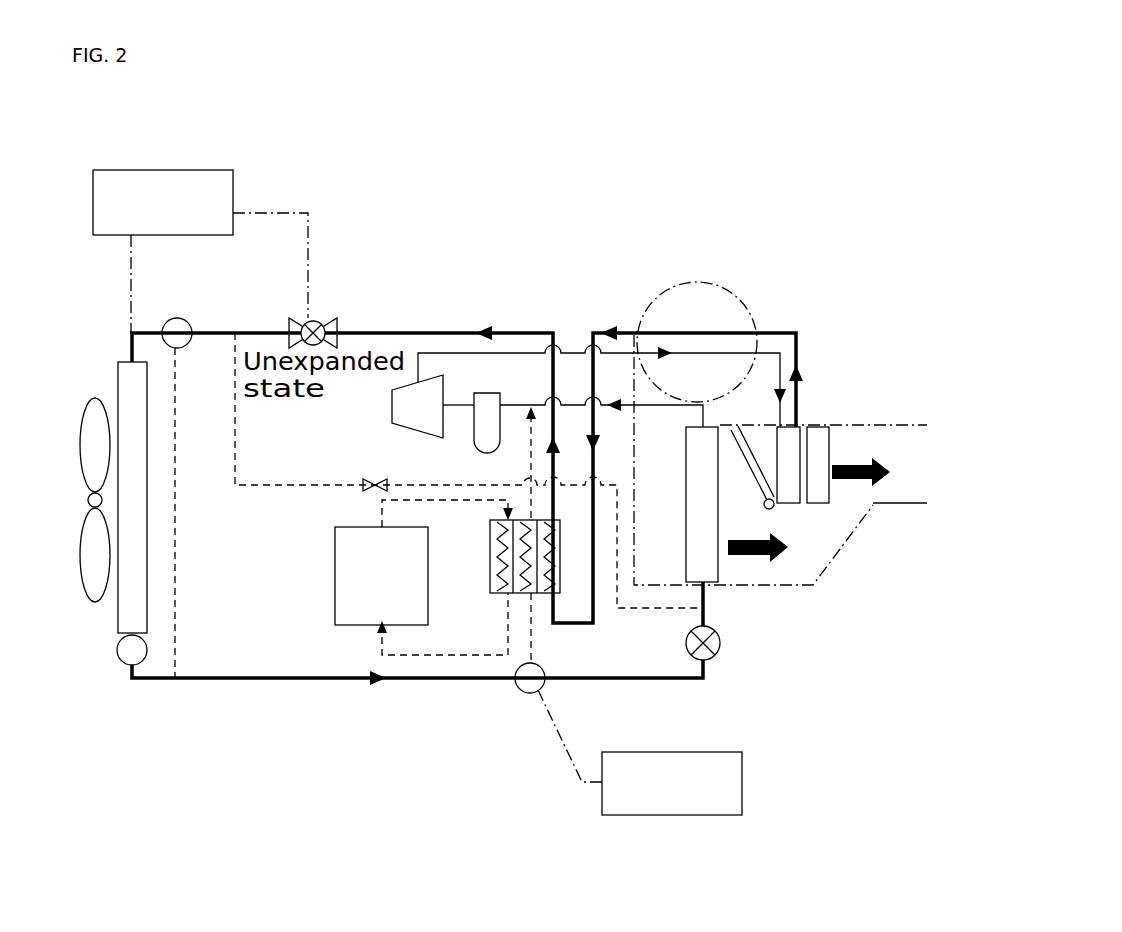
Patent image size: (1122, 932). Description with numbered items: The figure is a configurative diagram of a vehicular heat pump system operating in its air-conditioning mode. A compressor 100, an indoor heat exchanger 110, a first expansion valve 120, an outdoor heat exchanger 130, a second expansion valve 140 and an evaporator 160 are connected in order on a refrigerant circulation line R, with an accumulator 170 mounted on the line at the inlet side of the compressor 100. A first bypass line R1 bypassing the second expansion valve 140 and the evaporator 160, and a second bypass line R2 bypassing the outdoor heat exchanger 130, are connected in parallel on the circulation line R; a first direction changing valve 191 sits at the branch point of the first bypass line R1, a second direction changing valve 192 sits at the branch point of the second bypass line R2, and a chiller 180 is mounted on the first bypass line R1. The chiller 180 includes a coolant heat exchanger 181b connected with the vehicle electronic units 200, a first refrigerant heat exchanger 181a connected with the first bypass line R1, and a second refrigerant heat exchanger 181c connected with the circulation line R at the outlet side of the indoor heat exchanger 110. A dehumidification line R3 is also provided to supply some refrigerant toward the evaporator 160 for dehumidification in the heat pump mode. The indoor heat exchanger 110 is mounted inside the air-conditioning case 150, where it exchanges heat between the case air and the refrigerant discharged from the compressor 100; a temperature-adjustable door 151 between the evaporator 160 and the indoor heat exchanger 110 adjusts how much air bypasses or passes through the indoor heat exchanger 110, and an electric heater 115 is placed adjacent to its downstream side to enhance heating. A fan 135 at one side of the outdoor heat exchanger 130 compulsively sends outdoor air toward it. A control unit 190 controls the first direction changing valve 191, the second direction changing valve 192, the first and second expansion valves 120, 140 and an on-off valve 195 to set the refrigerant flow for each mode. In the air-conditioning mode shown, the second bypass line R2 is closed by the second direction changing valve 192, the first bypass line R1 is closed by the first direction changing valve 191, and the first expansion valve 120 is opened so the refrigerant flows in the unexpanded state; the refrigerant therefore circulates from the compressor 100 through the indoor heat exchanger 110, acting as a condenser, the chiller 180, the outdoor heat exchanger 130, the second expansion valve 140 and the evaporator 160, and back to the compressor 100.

The compressor 100 is at (392, 410).
The indoor heat exchanger 110 is at (795, 505).
The electric heater 115 is at (815, 505).
The first expansion valve 120 is at (320, 313).
The outdoor heat exchanger 130 is at (118, 613).
The fan 135 is at (93, 410).
The second expansion valve 140 is at (720, 643).
The air-conditioning case 150 is at (860, 517).
The temperature-adjustable door 151 is at (755, 453).
The evaporator 160 is at (718, 570).
The accumulator 170 is at (488, 393).
The chiller 180 is at (491, 569).
The first refrigerant heat exchanger 181a is at (523, 593).
The coolant heat exchanger 181b is at (503, 593).
The second refrigerant heat exchanger 181c is at (548, 593).
The control unit 190 is at (190, 170).
The first direction changing valve 191 is at (530, 695).
The second direction changing valve 192 is at (177, 318).
The on-off valve 195 is at (361, 489).
The vehicle electronic units 200 is at (381, 576).
The refrigerant circulation line R is at (514, 322).
The first bypass line R1 is at (565, 682).
The second bypass line R2 is at (176, 655).
The dehumidification line R3 is at (235, 385).